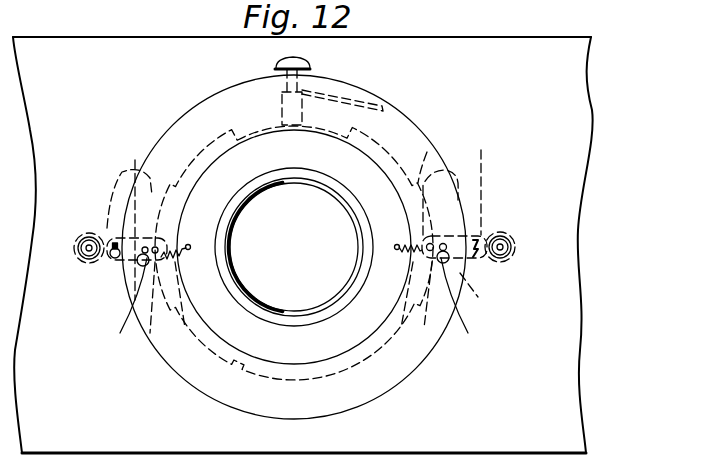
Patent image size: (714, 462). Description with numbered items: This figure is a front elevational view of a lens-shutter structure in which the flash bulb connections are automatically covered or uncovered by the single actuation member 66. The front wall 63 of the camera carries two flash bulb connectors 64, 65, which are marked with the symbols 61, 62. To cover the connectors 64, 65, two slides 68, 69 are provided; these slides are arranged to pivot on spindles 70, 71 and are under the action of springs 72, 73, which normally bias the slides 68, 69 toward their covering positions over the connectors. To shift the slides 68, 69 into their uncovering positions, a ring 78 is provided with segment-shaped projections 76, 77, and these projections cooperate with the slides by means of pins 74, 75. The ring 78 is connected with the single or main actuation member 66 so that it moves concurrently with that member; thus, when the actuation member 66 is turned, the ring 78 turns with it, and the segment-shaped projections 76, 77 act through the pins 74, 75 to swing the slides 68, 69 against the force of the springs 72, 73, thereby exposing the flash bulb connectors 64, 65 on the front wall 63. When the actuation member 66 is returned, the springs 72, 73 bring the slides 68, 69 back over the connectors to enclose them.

The symbol 61 is at (110, 258).
The symbol 62 is at (478, 258).
The front wall 63 is at (570, 115).
The flash bulb connector 64 is at (89, 233).
The flash bulb connector 65 is at (503, 236).
The single actuation member 66 is at (347, 103).
The slide 68 is at (136, 183).
The slide 69 is at (458, 183).
The spindle 70 is at (128, 272).
The spindle 71 is at (480, 299).
The spring 72 is at (153, 326).
The spring 73 is at (426, 345).
The pin 74 is at (146, 284).
The pin 75 is at (446, 304).
The segment-shaped projection 76 is at (166, 150).
The segment-shaped projection 77 is at (426, 155).
The ring 78 is at (238, 370).